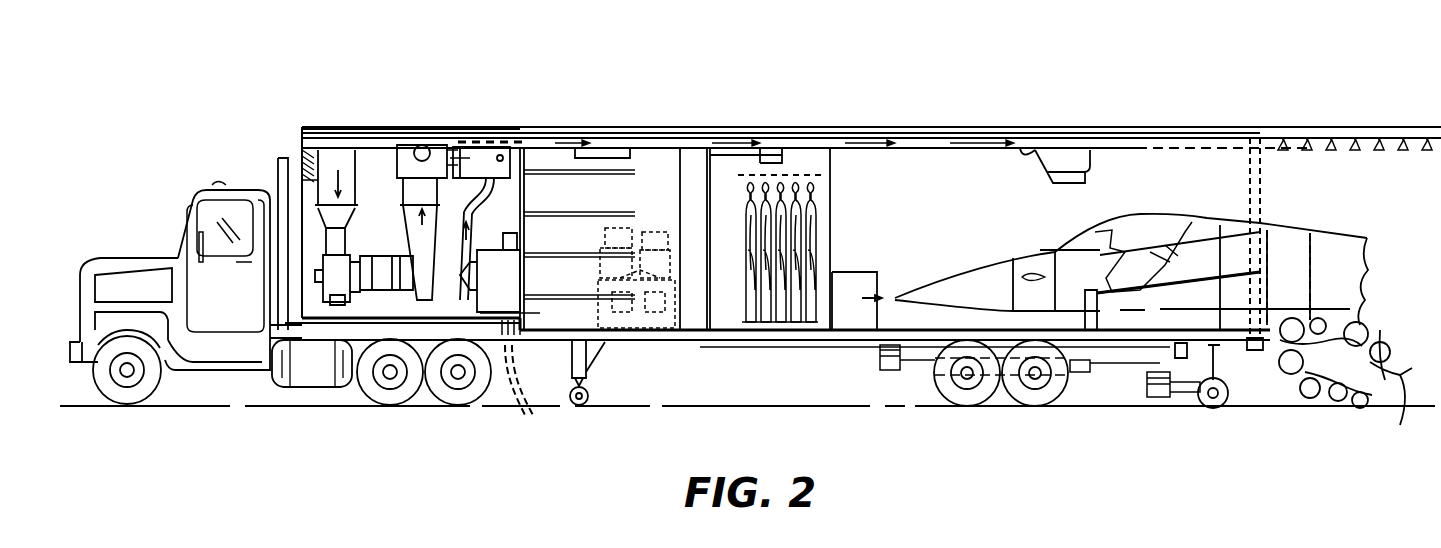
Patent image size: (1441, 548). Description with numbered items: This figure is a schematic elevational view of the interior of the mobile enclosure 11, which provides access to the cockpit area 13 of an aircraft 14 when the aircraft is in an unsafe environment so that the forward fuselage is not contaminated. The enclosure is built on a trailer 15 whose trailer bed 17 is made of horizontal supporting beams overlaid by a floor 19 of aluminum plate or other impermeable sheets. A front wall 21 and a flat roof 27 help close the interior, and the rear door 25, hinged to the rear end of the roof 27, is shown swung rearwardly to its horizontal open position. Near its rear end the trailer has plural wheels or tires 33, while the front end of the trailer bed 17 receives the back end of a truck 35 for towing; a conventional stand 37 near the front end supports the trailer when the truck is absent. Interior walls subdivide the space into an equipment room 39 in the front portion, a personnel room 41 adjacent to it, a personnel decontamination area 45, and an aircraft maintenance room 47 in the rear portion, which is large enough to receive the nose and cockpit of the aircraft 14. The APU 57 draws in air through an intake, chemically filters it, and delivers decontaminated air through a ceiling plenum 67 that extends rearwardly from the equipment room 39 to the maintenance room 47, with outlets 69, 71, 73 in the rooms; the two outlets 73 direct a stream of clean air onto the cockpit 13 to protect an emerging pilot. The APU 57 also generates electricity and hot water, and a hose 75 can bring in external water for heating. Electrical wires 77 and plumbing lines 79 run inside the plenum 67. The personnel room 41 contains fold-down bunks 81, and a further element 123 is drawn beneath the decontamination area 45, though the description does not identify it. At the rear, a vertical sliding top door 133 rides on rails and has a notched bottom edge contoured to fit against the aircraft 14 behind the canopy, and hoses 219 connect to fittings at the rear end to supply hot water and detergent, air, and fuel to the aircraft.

The mobile enclosure 11 is at (334, 97).
The cockpit area 13 is at (1165, 225).
The aircraft 14 is at (1345, 240).
The trailer 15 is at (513, 130).
The trailer bed 17 is at (683, 345).
The floor 19 is at (862, 330).
The front wall 21 is at (302, 133).
The rear door 25 is at (1360, 130).
The roof 27 is at (878, 128).
The wheels or tires 33 is at (995, 405).
The truck 35 is at (190, 192).
The stand 37 is at (583, 378).
The equipment room 39 is at (523, 148).
The personnel room 41 is at (655, 150).
The personnel decontamination area 45 is at (793, 165).
The aircraft maintenance room 47 is at (1025, 150).
The APU 57 is at (378, 310).
The plenum 67 is at (683, 150).
The outlet 69 is at (612, 150).
The outlet 71 is at (745, 146).
The air outlets 73 is at (1090, 165).
The hose 75 is at (513, 405).
The electrical wires 77 is at (492, 140).
The plumbing lines 79 is at (460, 140).
The bunks 81 is at (546, 258).
The suit rack floor 123 is at (790, 330).
The top door 133 is at (1262, 138).
The hoses 219 is at (1392, 400).